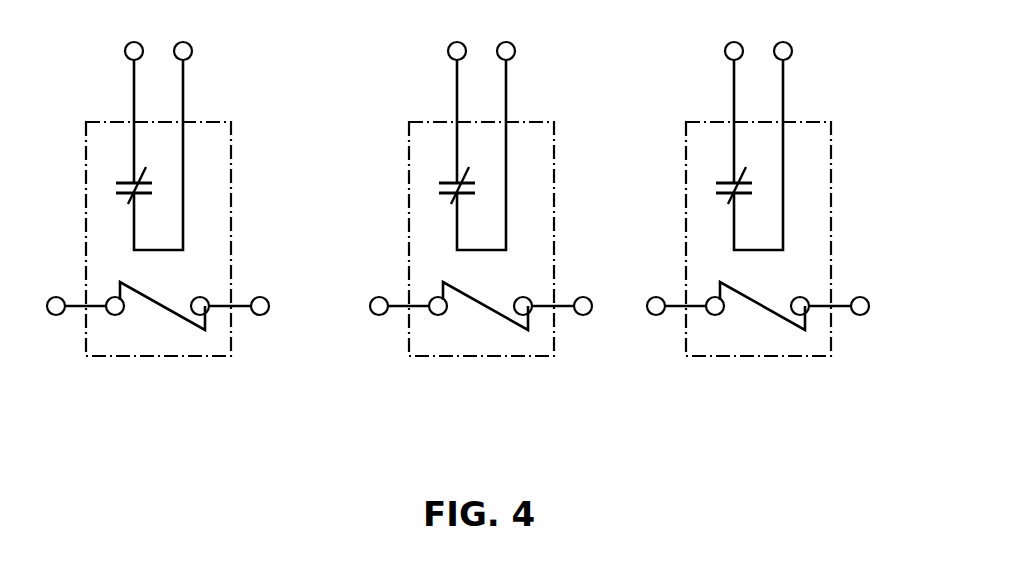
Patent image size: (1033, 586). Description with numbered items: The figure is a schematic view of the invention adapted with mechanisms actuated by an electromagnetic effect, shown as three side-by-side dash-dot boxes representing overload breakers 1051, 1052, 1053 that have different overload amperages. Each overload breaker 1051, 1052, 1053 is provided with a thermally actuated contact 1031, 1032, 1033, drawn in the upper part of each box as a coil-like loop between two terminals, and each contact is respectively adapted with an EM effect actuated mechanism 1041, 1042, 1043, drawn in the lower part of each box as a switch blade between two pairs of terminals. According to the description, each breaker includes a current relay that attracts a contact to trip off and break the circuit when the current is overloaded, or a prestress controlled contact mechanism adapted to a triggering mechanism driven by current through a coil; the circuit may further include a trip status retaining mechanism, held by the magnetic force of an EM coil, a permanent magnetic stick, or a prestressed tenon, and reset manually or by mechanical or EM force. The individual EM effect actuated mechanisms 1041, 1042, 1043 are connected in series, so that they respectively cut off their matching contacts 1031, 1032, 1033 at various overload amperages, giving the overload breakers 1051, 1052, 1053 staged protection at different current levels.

The thermally actuated contact 1031 is at (128, 177).
The thermally actuated contact 1032 is at (451, 177).
The thermally actuated contact 1033 is at (728, 177).
The EM effect actuated mechanism 1041 is at (147, 306).
The EM effect actuated mechanism 1042 is at (470, 306).
The EM effect actuated mechanism 1043 is at (747, 306).
The overload breaker 1051 is at (235, 230).
The overload breaker 1052 is at (558, 230).
The overload breaker 1053 is at (836, 230).